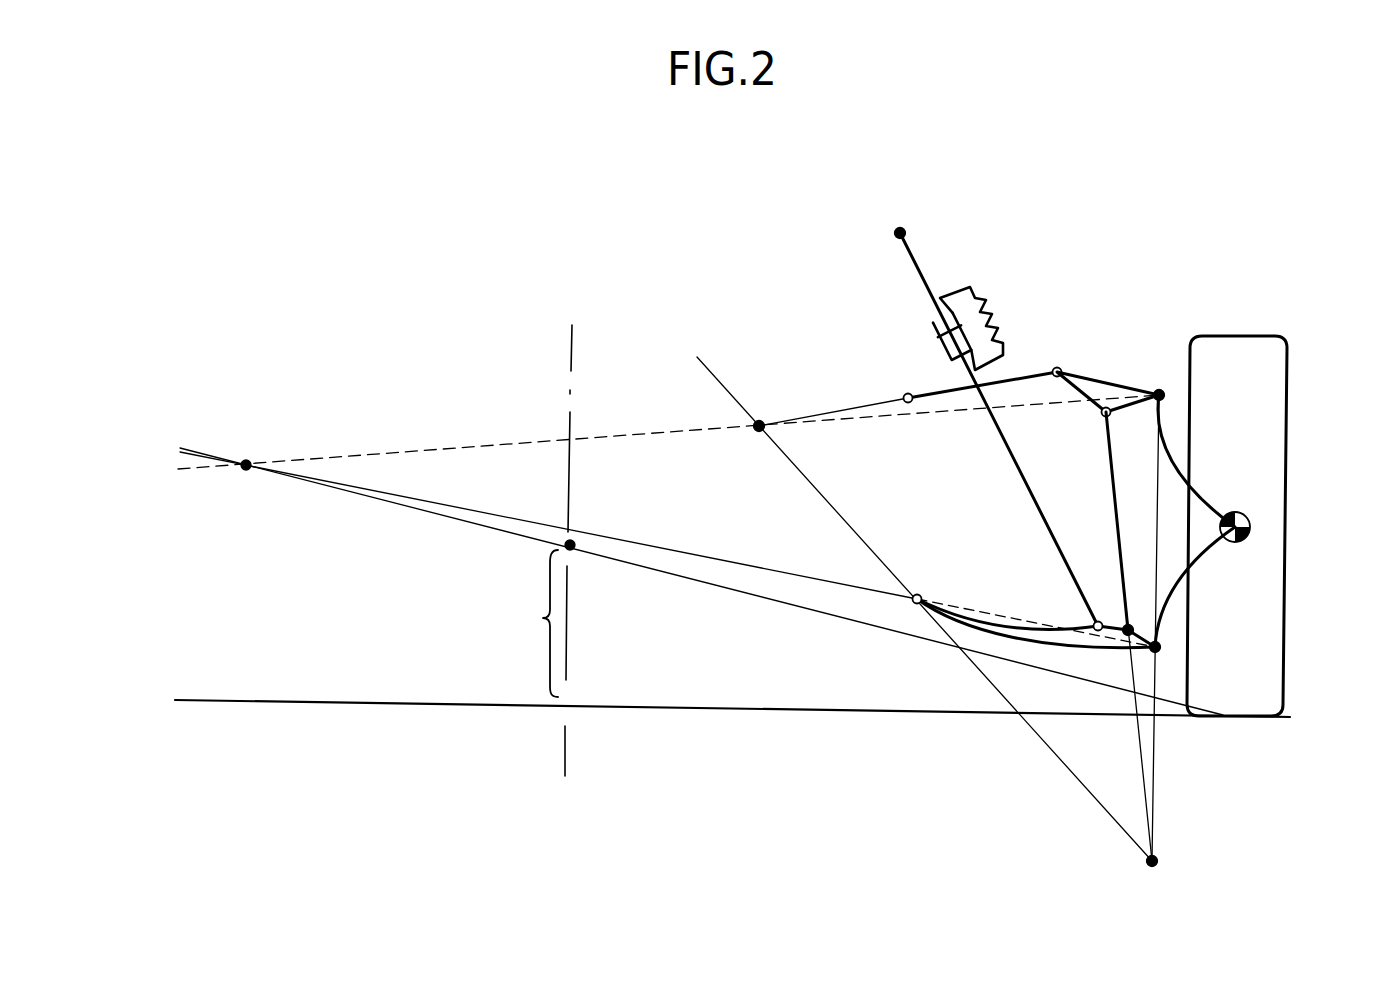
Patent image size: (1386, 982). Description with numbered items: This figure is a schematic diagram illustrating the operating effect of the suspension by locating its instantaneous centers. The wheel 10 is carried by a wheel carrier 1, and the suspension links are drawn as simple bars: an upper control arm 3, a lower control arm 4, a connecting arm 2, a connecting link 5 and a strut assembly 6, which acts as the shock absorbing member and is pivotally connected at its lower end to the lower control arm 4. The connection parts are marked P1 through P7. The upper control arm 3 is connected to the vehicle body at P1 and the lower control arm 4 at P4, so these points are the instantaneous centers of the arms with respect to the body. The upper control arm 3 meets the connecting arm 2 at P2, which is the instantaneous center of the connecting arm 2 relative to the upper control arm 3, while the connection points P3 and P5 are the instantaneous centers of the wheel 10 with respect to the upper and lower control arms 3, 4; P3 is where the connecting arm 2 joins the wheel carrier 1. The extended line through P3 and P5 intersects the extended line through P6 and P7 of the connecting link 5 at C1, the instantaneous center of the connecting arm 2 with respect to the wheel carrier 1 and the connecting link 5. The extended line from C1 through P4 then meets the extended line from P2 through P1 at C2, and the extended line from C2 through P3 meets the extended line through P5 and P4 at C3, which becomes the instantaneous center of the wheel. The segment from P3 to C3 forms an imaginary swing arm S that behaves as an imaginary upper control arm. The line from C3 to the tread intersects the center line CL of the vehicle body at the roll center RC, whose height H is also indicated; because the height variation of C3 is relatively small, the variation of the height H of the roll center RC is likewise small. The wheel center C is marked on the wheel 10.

The wheel carrier 1 is at (1175, 557).
The connecting arm 2 is at (1114, 384).
The upper control arm 3 is at (943, 391).
The lower control arm 4 is at (988, 619).
The connecting link 5 is at (1112, 502).
The strut assembly 6 is at (918, 264).
The wheel 10 is at (1272, 413).
The wheel center C is at (1250, 532).
The instantaneous center of the connecting arm C1 is at (1151, 879).
The intersecting point C2 is at (760, 421).
The instantaneous center of the wheel C3 is at (246, 460).
The connection part P1 is at (901, 392).
The connection part P2 is at (1057, 367).
The connection part P3 is at (1160, 390).
The connection part P4 is at (919, 594).
The connection part P5 is at (1155, 643).
The connection part P6 is at (1103, 417).
The connection part P7 is at (1126, 626).
The imaginary swing arm S is at (653, 430).
The roll center RC is at (572, 548).
The height of the roll center H is at (540, 623).
The center line of the vehicle body CL is at (568, 534).